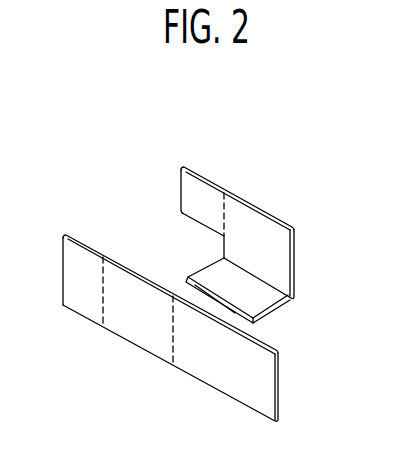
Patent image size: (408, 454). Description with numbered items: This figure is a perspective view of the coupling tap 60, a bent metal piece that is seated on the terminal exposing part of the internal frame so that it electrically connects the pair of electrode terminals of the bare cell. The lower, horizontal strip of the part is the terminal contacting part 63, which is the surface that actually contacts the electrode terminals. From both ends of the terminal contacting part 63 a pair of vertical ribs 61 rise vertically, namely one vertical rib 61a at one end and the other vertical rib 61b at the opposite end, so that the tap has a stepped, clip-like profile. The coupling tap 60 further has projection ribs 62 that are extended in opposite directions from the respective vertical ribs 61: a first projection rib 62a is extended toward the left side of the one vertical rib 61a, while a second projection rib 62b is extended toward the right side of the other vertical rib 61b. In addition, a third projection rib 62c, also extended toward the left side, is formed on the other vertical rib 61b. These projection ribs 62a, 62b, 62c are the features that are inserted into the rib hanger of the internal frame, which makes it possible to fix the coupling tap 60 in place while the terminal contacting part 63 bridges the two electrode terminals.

The coupling tap 60 is at (93, 154).
The vertical ribs 61 is at (355, 144).
The vertical rib 61a is at (254, 236).
The vertical rib 61b is at (138, 312).
The projection ribs 62 is at (153, 423).
The first projection rib 62a is at (193, 194).
The second projection rib 62b is at (192, 375).
The third projection rib 62c is at (87, 297).
The terminal contacting part 63 is at (263, 298).